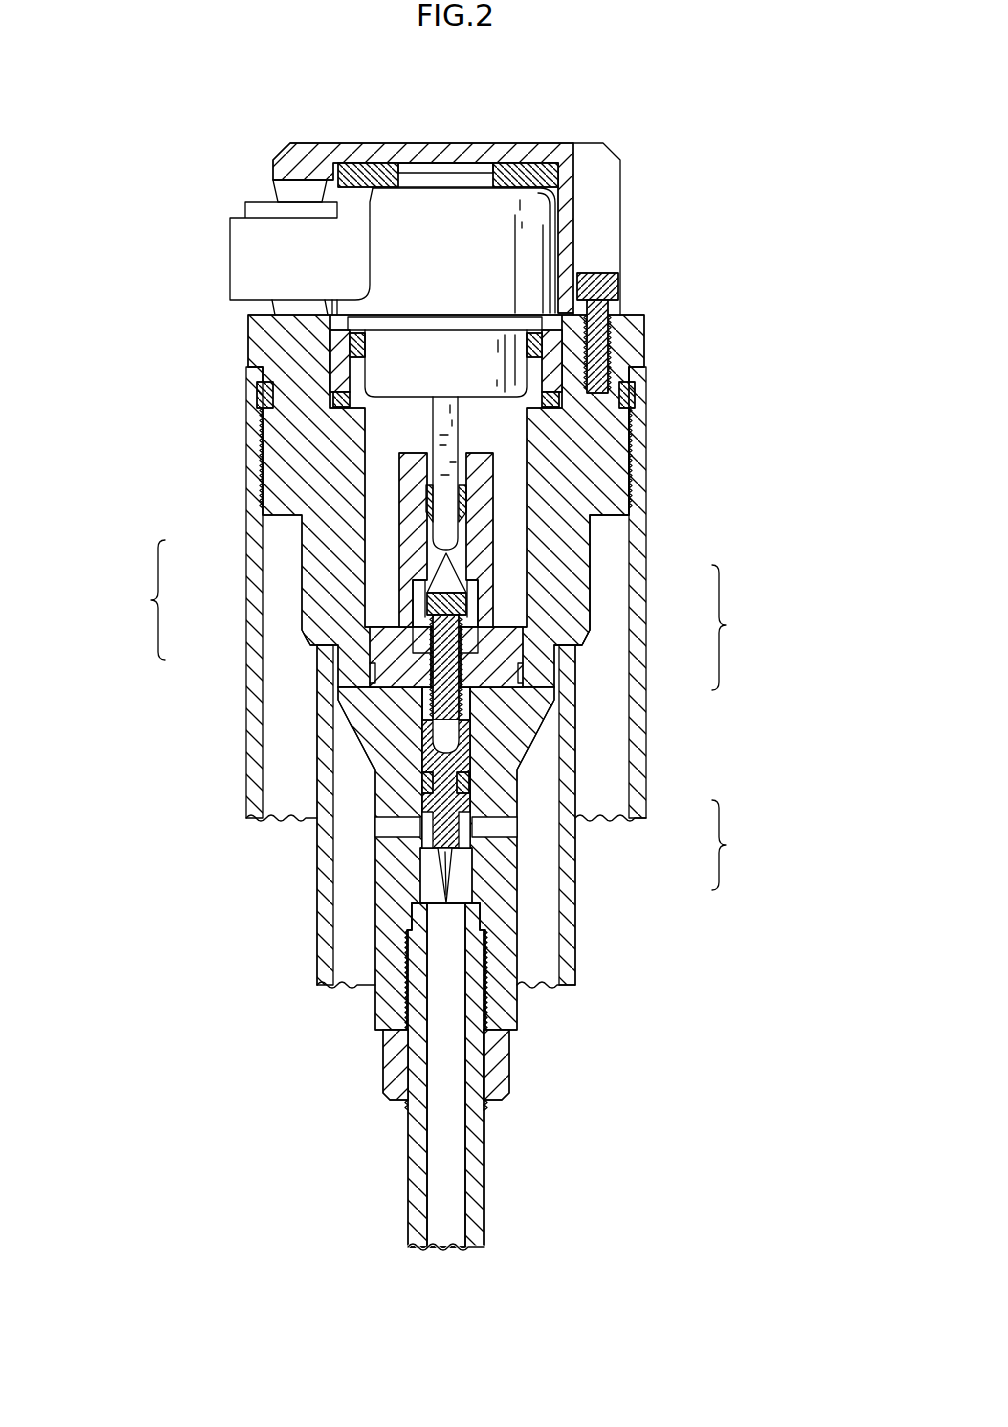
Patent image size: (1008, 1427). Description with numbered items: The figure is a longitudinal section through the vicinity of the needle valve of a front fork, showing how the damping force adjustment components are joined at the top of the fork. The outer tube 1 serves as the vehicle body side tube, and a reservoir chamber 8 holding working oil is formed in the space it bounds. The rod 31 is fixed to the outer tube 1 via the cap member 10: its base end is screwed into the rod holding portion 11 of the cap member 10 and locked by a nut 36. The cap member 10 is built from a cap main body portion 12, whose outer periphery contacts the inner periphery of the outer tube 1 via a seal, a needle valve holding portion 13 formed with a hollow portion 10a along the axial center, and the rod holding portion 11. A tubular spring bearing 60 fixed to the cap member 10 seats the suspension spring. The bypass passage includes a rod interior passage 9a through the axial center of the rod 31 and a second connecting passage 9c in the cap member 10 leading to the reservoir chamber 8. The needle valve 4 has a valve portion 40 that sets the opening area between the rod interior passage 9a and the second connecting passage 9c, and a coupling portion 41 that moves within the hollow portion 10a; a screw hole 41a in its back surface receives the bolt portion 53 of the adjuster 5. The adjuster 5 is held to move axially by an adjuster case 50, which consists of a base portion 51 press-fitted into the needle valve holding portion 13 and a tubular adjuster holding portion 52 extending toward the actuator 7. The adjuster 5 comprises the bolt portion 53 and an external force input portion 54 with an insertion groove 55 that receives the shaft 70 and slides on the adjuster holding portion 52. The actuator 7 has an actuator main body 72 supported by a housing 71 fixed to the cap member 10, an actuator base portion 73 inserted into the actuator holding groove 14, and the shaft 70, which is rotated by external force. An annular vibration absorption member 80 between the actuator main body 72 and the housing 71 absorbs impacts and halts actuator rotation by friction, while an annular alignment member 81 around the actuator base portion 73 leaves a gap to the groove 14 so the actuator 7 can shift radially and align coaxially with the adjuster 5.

The outer tube 1 is at (246, 720).
The needle valve 4 is at (732, 845).
The adjuster 5 is at (146, 600).
The actuator 7 is at (557, 250).
The reservoir chamber 8 is at (355, 908).
The rod interior passage 9a is at (447, 1228).
The second connecting passage 9c is at (398, 828).
The cap member 10 is at (632, 510).
The hollow portion 10a is at (468, 721).
The rod holding portion 11 is at (385, 1012).
The cap main body portion 12 is at (284, 440).
The needle valve holding portion 13 is at (388, 788).
The actuator holding groove 14 is at (582, 312).
The rod 31 is at (405, 1177).
The nut 36 is at (383, 1070).
The valve portion 40 is at (487, 837).
The coupling portion 41 is at (472, 785).
The screw hole 41a is at (475, 768).
The adjuster case 50 is at (735, 627).
The base portion 51 is at (528, 662).
The adjuster holding portion 52 is at (480, 557).
The bolt portion 53 is at (407, 660).
The external force input portion 54 is at (427, 547).
The insertion groove 55 is at (470, 497).
The spring bearing 60 is at (310, 967).
The shaft 70 is at (450, 437).
The housing 71 is at (528, 143).
The actuator main body 72 is at (528, 222).
The actuator base portion 73 is at (503, 370).
The vibration absorption member 80 is at (365, 178).
The alignment member 81 is at (348, 366).